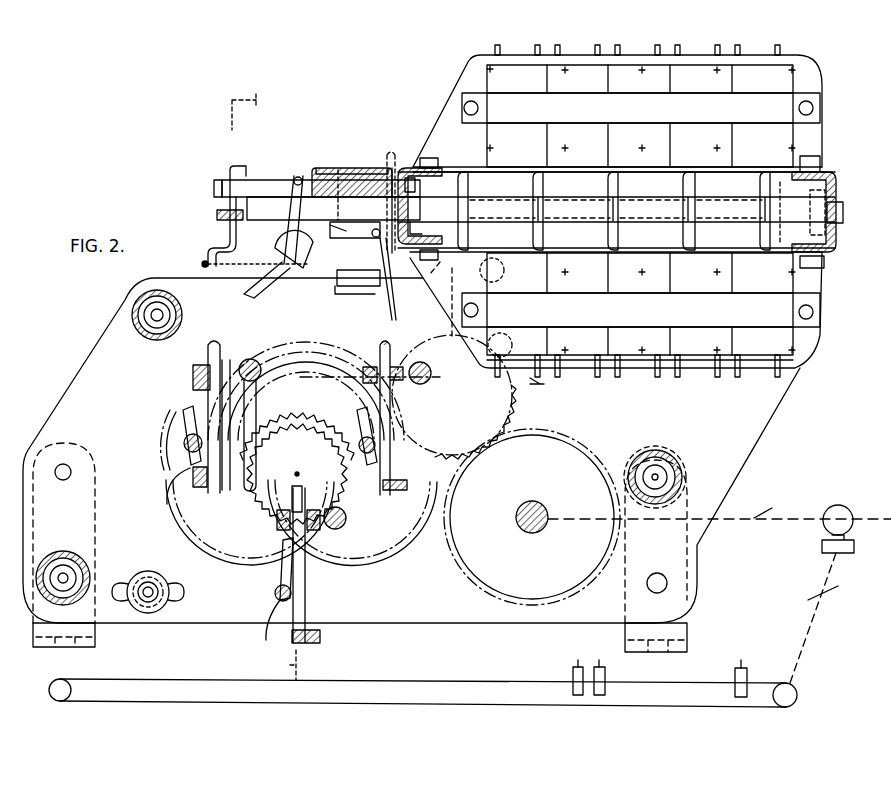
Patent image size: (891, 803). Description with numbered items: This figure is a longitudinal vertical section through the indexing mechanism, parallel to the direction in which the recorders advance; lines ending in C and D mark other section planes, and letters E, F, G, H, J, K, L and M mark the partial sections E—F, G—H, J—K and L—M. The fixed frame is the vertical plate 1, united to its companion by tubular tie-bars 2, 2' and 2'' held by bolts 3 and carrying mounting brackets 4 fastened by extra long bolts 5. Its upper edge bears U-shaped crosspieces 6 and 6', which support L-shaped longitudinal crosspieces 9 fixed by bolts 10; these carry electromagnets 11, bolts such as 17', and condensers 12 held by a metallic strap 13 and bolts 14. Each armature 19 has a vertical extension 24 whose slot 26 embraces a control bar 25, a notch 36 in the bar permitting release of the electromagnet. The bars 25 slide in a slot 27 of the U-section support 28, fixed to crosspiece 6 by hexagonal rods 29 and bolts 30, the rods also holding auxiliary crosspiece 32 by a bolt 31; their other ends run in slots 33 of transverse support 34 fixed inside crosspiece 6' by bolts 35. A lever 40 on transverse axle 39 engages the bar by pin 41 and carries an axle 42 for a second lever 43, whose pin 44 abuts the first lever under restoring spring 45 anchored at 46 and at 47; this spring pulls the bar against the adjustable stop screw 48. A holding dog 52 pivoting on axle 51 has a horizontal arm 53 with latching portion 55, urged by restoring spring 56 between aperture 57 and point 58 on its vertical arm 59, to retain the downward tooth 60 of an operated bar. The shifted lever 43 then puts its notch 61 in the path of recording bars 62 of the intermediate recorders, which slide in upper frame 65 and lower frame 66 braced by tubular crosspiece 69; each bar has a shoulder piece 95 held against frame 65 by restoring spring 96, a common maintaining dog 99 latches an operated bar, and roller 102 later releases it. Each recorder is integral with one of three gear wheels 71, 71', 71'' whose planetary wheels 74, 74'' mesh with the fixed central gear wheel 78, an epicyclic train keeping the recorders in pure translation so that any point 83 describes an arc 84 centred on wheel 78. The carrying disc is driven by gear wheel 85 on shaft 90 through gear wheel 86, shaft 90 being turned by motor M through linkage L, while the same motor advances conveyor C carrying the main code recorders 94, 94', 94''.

The vertical plate 1 is at (108, 395).
The tubular tie-bar 2 is at (63, 567).
The tubular tie-bar 2' is at (658, 466).
The tubular tie-bar 2'' is at (193, 312).
The bolt 3 is at (138, 318).
The mounting bracket 4 is at (90, 632).
The extra long bolt 5 is at (65, 478).
The U-shaped crosspiece 6 is at (414, 203).
The U-shaped crosspiece 6' is at (823, 208).
The L-shaped longitudinal crosspiece 9 is at (448, 122).
The bolt 10 is at (436, 162).
The electromagnet 11 is at (500, 272).
The condenser 12 is at (524, 88).
The metallic strap 13 is at (668, 118).
The bolt 14 is at (471, 101).
The roller 17' is at (510, 306).
The armature 19 is at (448, 262).
The vertical extension of the armature 24 is at (460, 236).
The control bar 25 is at (520, 193).
The slot 26 is at (458, 210).
The slot 27 is at (390, 168).
The supporting part 28 is at (360, 172).
The hexagonal rod 29 is at (260, 180).
The bolt 30 is at (415, 186).
The bolt 31 is at (220, 188).
The auxiliary crosspiece 32 is at (236, 168).
The slot 33 is at (788, 200).
The transverse support 34 is at (798, 235).
The bolt 35 is at (843, 194).
The notch 36 is at (418, 236).
The transverse axle 39 is at (300, 178).
The lever 40 is at (297, 175).
The pin 41 is at (220, 236).
The axle 42 is at (288, 270).
The second lever 43 is at (372, 236).
The pin 44 is at (278, 246).
The restoring spring 45 is at (205, 260).
The spring fixing point 46 is at (262, 270).
The spring fixing point 47 is at (202, 265).
The screw 48 is at (216, 214).
The axle 51 is at (422, 218).
The holding dog 52 is at (358, 270).
The horizontal arm 53 is at (332, 228).
The latching portion 55 is at (348, 224).
The restoring spring 56 is at (355, 290).
The aperture 57 is at (310, 268).
The spring attachment point 58 is at (392, 280).
The vertical arm 59 is at (412, 300).
The tooth 60 is at (338, 168).
The notch 61 is at (255, 288).
The recording bar 62 is at (216, 350).
The upper frame 65 is at (195, 368).
The lower frame 66 is at (192, 490).
The tubular crosspiece 69 is at (250, 360).
The gear wheel 71 is at (168, 433).
The pawl 71' is at (414, 418).
The pawl 71'' is at (325, 565).
The planetary gear wheel 74 is at (326, 445).
The ring 74'' is at (239, 487).
The central gear wheel 78 is at (307, 465).
The point 83 is at (395, 428).
The arc 84 is at (336, 360).
The gear wheel 85 is at (573, 452).
The gear wheel 86 is at (495, 398).
The shaft 90 is at (538, 508).
The main code recorder 94 is at (423, 682).
The main code recorder 94' is at (617, 676).
The main code recorder 94'' is at (762, 673).
The shoulder piece 95 is at (246, 364).
The restoring spring 96 is at (262, 424).
The maintaining dog 99 is at (186, 440).
The roller 102 is at (138, 578).
The conveyor / section line C is at (239, 107).
The section line D is at (285, 663).
The partial section mark E is at (280, 164).
The partial section mark F is at (327, 156).
The partial section mark G is at (364, 214).
The partial section mark H is at (436, 214).
The partial section mark J is at (264, 205).
The partial section mark K is at (326, 205).
The linkage mechanism L is at (577, 473).
The motor M is at (696, 526).